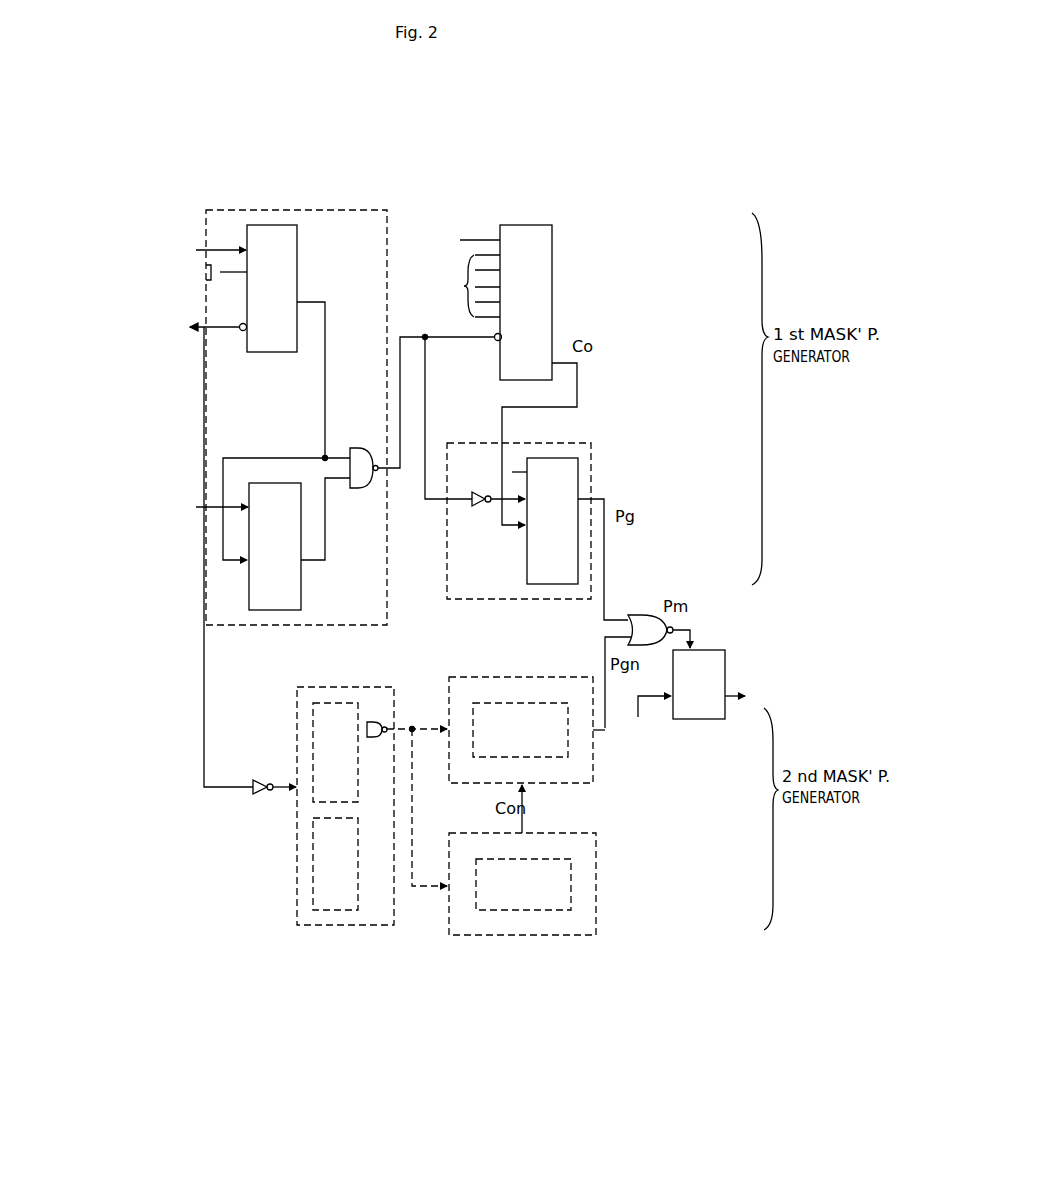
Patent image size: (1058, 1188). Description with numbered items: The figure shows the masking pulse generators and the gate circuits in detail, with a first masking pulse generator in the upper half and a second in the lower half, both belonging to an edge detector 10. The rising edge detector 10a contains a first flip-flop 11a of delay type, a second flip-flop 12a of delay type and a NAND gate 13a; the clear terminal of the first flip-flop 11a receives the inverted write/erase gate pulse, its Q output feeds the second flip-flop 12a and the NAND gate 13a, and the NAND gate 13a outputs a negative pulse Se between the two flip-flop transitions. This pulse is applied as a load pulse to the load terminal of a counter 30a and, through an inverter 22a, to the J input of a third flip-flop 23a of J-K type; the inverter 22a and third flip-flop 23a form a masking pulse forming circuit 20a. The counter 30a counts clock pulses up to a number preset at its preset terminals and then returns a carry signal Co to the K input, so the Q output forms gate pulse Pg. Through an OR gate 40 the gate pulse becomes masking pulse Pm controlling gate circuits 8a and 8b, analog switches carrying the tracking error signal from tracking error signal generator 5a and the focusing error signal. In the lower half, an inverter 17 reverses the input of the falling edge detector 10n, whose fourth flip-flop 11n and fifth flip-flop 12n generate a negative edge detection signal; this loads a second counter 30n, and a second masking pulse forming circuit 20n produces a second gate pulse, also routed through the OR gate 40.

The edge detector 10 is at (273, 1044).
The rising edge detector 10a is at (252, 210).
The first flip-flop 11a is at (297, 252).
The second flip-flop 12a is at (301, 585).
The NAND gate 13a is at (362, 448).
The falling edge detector 10n is at (307, 925).
The fourth flip-flop 11n is at (322, 718).
The fifth flip-flop 12n is at (343, 905).
The inverter 17 is at (252, 791).
The counter 30a is at (558, 202).
The masking pulse forming circuit 20a is at (560, 443).
The inverter 22a is at (482, 510).
The third flip-flop 23a is at (575, 483).
The OR gate 40 is at (645, 615).
The gate circuit 8a is at (691, 658).
The gate circuit 8b is at (702, 648).
The tracking error signal generator 5a is at (699, 752).
The masking pulse forming circuit 20n is at (555, 783).
The second counter 30n is at (508, 935).